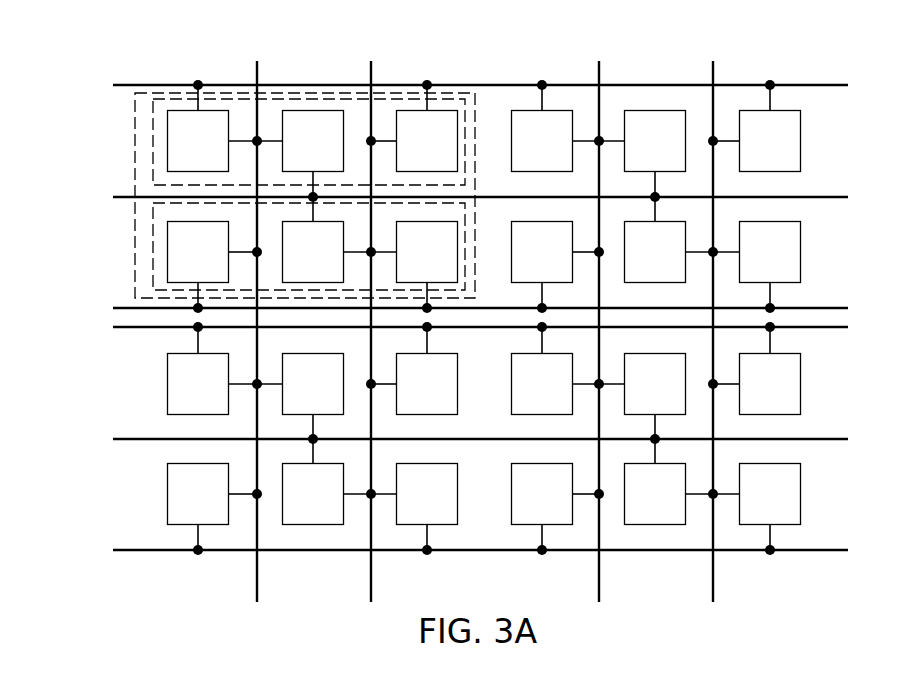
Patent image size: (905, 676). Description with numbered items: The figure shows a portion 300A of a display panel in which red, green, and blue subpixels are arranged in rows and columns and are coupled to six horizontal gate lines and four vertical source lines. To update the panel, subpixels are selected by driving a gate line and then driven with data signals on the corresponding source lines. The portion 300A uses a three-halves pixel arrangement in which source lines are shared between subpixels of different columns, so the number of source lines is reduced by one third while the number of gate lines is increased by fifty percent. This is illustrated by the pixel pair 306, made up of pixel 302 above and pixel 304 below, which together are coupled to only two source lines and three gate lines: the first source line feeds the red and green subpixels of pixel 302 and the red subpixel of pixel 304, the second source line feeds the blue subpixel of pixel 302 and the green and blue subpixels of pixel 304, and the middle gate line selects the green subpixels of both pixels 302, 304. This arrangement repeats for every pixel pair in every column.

The portion of the display panel 300A is at (175, 46).
The pixel 302 is at (153, 144).
The pixel 304 is at (153, 230).
The pixel pair 306 is at (135, 265).